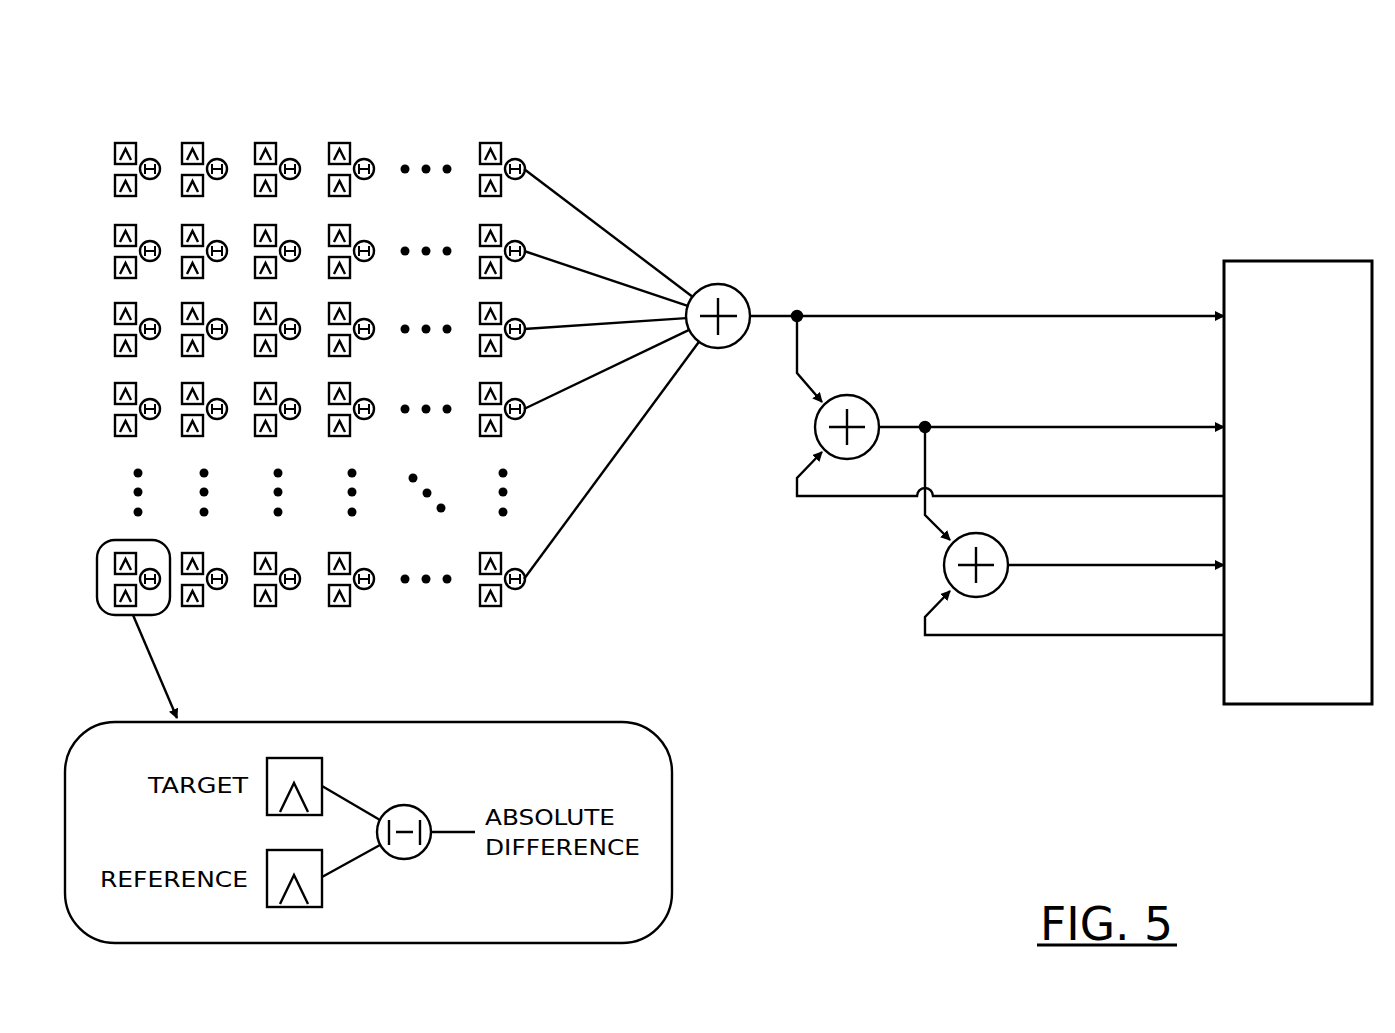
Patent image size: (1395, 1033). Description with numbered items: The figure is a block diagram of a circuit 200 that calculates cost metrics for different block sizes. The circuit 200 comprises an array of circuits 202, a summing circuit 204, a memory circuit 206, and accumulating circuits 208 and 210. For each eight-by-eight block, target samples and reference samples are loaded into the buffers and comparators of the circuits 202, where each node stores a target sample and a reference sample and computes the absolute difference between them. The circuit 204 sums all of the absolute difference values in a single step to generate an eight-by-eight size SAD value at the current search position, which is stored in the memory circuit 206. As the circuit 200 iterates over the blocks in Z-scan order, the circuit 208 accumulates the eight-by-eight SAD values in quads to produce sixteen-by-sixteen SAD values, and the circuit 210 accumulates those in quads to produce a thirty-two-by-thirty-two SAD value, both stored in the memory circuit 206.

The circuit 200 is at (613, 59).
The blocks (or circuits) 202 is at (272, 117).
The block (or circuit) 204 is at (730, 287).
The memory circuit 206 is at (1288, 261).
The block (or circuit) 208 is at (815, 428).
The block (or circuit) 210 is at (945, 567).